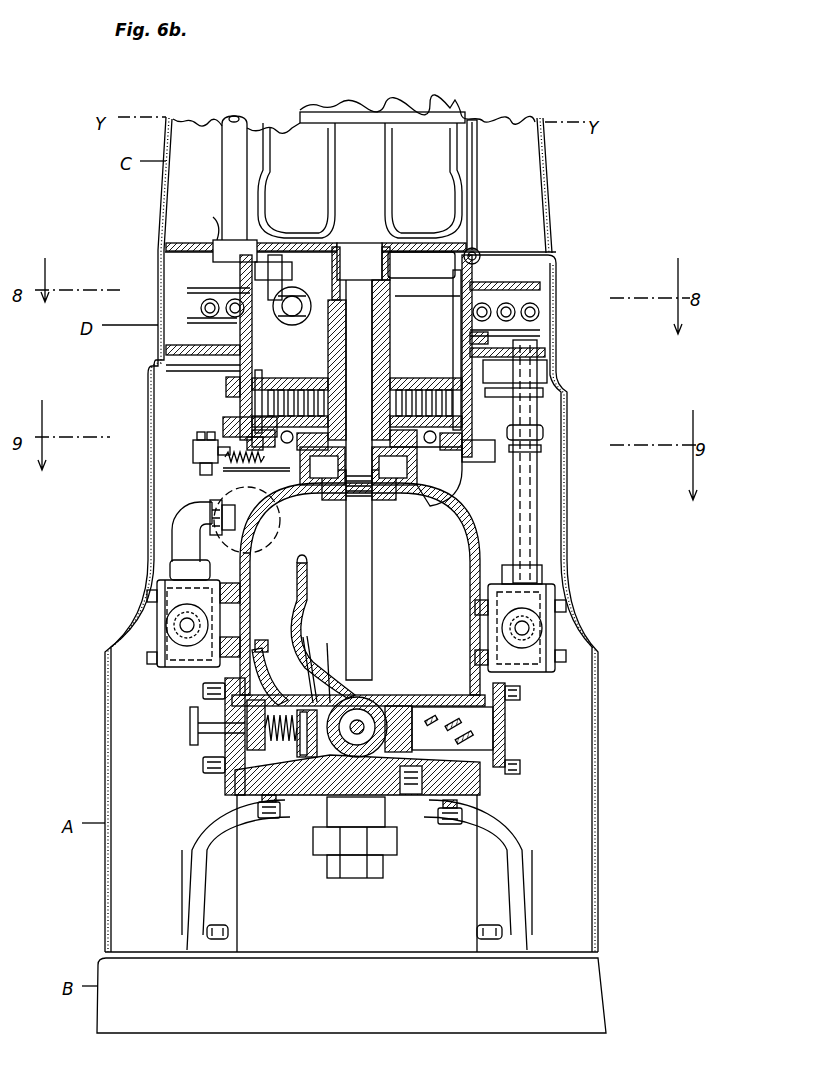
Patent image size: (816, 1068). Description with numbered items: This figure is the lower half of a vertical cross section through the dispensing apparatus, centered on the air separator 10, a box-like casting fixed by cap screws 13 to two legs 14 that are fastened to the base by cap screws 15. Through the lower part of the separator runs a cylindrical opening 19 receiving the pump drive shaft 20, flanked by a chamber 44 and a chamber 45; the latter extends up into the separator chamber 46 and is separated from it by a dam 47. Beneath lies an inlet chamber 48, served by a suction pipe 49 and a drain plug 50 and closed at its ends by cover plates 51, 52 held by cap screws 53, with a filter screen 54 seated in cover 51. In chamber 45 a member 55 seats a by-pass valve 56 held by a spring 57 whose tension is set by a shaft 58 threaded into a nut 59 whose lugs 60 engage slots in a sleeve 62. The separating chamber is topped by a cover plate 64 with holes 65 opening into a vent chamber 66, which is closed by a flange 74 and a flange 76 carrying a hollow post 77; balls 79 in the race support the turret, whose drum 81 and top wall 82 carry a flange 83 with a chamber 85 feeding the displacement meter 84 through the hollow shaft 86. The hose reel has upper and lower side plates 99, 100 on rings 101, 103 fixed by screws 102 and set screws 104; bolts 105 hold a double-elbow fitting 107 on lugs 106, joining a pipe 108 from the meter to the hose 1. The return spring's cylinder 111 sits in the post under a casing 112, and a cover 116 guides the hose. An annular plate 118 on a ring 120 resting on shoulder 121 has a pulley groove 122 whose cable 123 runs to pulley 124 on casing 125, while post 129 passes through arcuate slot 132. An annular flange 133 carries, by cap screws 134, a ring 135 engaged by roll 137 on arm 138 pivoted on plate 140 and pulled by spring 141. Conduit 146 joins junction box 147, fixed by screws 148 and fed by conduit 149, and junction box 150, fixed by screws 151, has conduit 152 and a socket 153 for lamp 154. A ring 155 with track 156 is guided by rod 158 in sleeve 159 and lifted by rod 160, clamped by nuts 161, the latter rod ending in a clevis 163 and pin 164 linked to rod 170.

The hose 1 is at (300, 298).
The air separator 10 is at (468, 590).
The cap screws 13 is at (265, 820).
The legs 14 is at (237, 883).
The cap screws 15 is at (245, 925).
The cylindrical opening 19 is at (380, 712).
The drive shaft 20 is at (362, 720).
The chamber 44 is at (418, 710).
The chamber 45 is at (275, 606).
The separator chamber 46 is at (360, 589).
The dam 47 is at (306, 565).
The inlet chamber 48 is at (418, 795).
The suction pipe 49 is at (355, 878).
The drain plug 50 is at (418, 800).
The cover plate 51 is at (500, 745).
The cover plate 52 is at (210, 772).
The cap screws 53 is at (203, 692).
The filter screen 54 is at (520, 695).
The member 55 is at (325, 664).
The by-pass valve 56 is at (240, 740).
The spring 57 is at (303, 664).
The shaft 58 is at (190, 723).
The nut 59 is at (270, 690).
The lugs 60 is at (222, 422).
The sleeve 62 is at (258, 665).
The cover plate 64 is at (280, 535).
The holes 65 is at (372, 634).
The vent chamber 66 is at (270, 525).
The flange 74 is at (394, 466).
The flange 76 is at (425, 505).
The hollow cylindrical post 77 is at (390, 312).
The balls 79 is at (322, 466).
The drum 81 is at (238, 398).
The top wall 82 is at (421, 265).
The flange 83 is at (428, 245).
The displacement meter 84 is at (313, 180).
The chamber 85 is at (359, 261).
The hollow shaft 86 is at (388, 325).
The upper side plate 99 is at (556, 275).
The lower side plate 100 is at (540, 320).
The annular ring 101 is at (498, 288).
The screws 102 is at (478, 258).
The annular ring 103 is at (558, 336).
The set screws 104 is at (490, 338).
The bolts 105 is at (245, 267).
The lugs 106 is at (280, 262).
The double-elbow fitting 107 is at (201, 223).
The pipe 108 is at (225, 145).
The cylinder 111 is at (400, 392).
The casing 112 is at (445, 380).
The cover 116 is at (218, 318).
The annular plate 118 is at (550, 354).
The annular ring 120 is at (160, 368).
The shoulder 121 is at (548, 410).
The pulley groove 122 is at (240, 380).
The flexible cable 123 is at (152, 385).
The pulley 124 is at (550, 393).
The casing 125 is at (550, 370).
The post 129 is at (537, 482).
The arcuate slot 132 is at (190, 345).
The annular flange 133 is at (545, 432).
The cap screws 134 is at (545, 460).
The ring 135 is at (543, 448).
The roll 137 is at (192, 450).
The arm 138 is at (200, 470).
The plate 140 is at (224, 460).
The spring 141 is at (225, 470).
The conduit 146 is at (515, 532).
The junction box 147 is at (545, 636).
The screws 148 is at (566, 656).
The conduit 149 is at (530, 622).
The junction box 150 is at (165, 636).
The screws 151 is at (180, 668).
The conduit 152 is at (178, 622).
The socket 153 is at (180, 538).
The electric lamp 154 is at (210, 510).
The annular ring 155 is at (497, 455).
The annular track 156 is at (490, 470).
The rod 158 is at (264, 380).
The sleeve 159 is at (276, 393).
The rod 160 is at (461, 318).
The nuts 161 is at (495, 462).
The clevis 163 is at (477, 250).
The pin 164 is at (478, 248).
The rod 170 is at (478, 143).